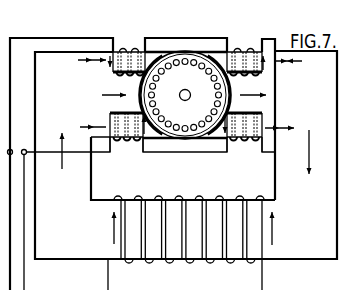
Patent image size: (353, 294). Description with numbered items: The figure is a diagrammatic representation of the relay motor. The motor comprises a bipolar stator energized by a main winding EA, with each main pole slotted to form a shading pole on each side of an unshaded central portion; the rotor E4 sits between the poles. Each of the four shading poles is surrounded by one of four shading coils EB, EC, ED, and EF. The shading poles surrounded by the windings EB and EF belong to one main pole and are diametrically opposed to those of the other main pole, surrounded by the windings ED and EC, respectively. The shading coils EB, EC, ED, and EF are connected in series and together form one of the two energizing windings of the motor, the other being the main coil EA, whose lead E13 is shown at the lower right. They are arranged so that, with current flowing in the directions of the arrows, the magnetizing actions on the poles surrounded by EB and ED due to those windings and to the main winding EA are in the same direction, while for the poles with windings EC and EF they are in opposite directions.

The rotating drum / armature E4 is at (183, 63).
The shading coil EB is at (124, 50).
The shading coil EC is at (232, 50).
The shading coil EF is at (128, 139).
The shading coil ED is at (240, 139).
The main winding EA is at (259, 276).
The terminal lead E13 is at (352, 293).